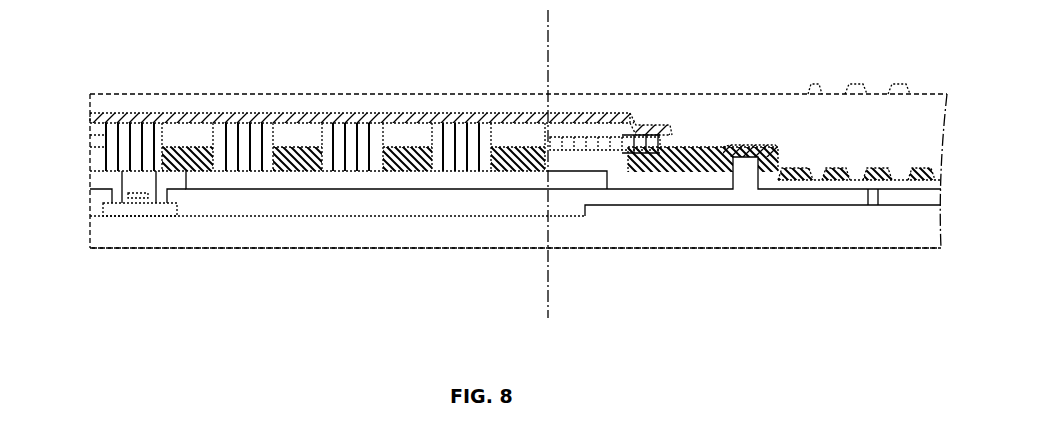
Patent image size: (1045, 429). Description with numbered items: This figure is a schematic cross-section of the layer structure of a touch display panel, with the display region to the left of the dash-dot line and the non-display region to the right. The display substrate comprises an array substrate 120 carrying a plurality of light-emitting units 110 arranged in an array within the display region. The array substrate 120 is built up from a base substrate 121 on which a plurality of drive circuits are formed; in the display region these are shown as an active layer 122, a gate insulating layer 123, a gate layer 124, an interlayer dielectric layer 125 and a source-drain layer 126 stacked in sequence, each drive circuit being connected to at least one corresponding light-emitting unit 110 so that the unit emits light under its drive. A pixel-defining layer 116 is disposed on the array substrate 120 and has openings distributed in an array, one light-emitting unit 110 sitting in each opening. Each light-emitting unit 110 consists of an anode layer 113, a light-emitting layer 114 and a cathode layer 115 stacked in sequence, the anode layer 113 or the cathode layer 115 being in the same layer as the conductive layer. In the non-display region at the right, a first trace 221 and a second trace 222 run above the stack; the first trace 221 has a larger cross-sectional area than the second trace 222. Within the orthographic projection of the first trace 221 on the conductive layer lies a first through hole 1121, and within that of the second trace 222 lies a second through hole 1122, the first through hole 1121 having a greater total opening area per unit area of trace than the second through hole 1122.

The light-emitting unit 110 is at (434, 99).
The anode layer 113 is at (393, 150).
The light-emitting layer 114 is at (410, 128).
The cathode layer 115 is at (575, 135).
The pixel-defining layer 116 is at (462, 135).
The array substrate 120 is at (486, 246).
The base substrate 121 is at (302, 235).
The active layer 122 is at (157, 210).
The gate insulating layer 123 is at (343, 207).
The gate layer 124 is at (137, 199).
The interlayer dielectric layer 125 is at (247, 182).
The source-drain layer 126 is at (174, 182).
The first through hole 1121 is at (903, 181).
The second through hole 1122 is at (818, 181).
The first trace 221 is at (900, 84).
The second trace 222 is at (813, 84).